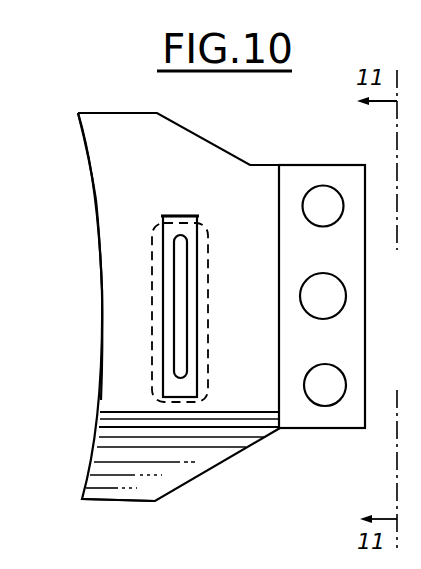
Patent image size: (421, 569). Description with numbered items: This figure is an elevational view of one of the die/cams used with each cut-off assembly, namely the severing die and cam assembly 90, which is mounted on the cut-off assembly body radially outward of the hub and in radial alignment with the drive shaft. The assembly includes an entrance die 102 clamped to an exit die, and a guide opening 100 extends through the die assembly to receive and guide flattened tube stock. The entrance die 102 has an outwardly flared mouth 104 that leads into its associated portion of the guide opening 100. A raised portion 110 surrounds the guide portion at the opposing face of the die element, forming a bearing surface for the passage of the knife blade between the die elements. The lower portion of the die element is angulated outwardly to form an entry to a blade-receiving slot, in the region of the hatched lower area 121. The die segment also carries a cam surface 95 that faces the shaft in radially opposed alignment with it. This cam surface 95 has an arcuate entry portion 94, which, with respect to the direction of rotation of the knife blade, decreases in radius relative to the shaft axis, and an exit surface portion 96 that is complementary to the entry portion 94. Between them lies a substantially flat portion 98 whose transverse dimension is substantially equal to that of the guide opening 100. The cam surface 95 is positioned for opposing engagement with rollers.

The severing die and cam assembly 90 is at (209, 158).
The arcuate entry portion 94 is at (88, 467).
The cam surface 95 is at (90, 281).
The exit surface portion 96 is at (87, 148).
The flat portion 98 is at (101, 329).
The guide opening 100 is at (178, 357).
The entrance die 102 is at (330, 418).
The outwardly flared mouth 104 is at (204, 331).
The raised portion 110 is at (175, 222).
The serrated region 121 is at (183, 470).